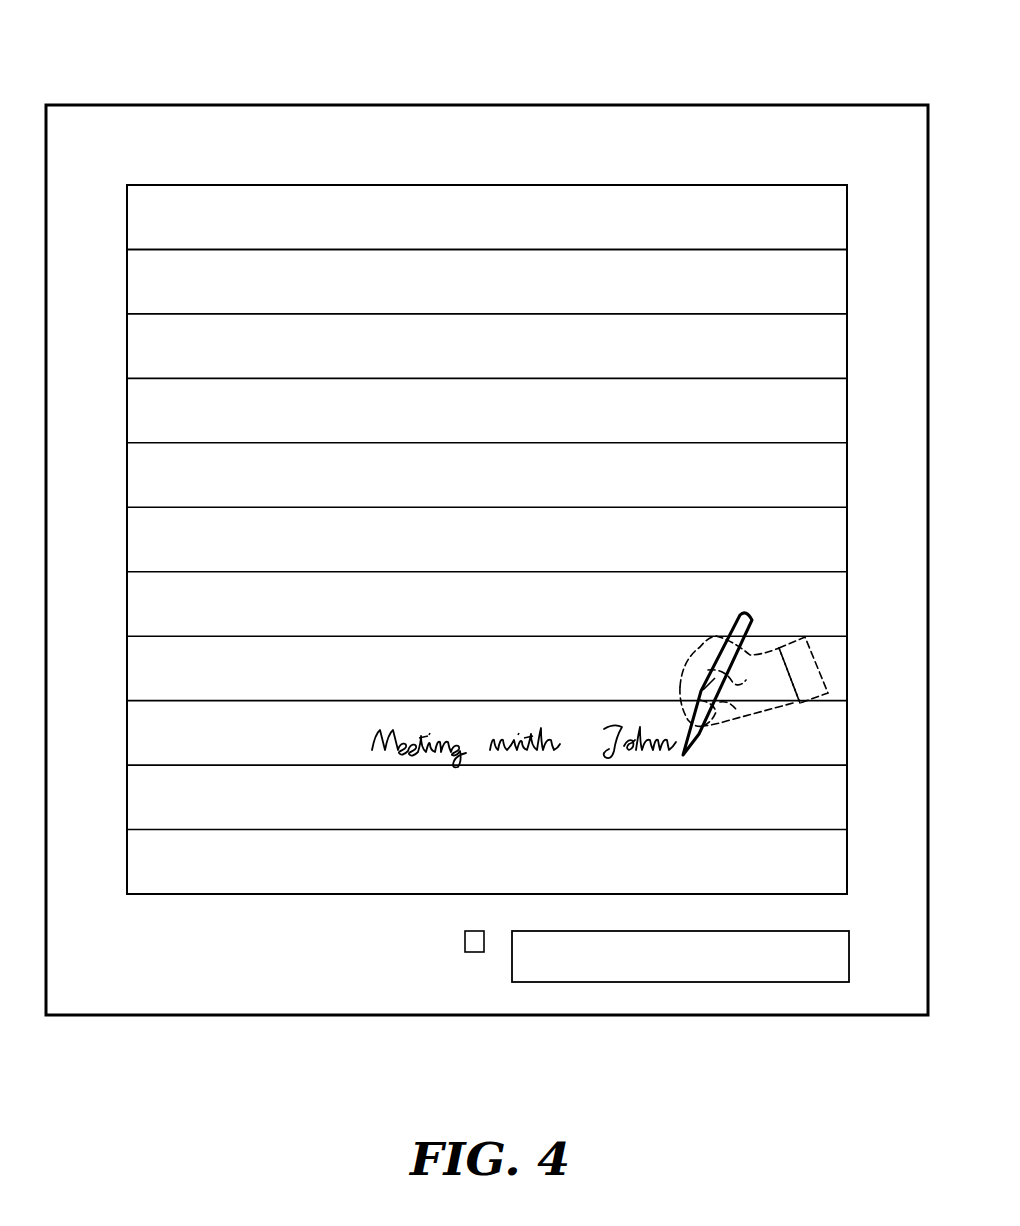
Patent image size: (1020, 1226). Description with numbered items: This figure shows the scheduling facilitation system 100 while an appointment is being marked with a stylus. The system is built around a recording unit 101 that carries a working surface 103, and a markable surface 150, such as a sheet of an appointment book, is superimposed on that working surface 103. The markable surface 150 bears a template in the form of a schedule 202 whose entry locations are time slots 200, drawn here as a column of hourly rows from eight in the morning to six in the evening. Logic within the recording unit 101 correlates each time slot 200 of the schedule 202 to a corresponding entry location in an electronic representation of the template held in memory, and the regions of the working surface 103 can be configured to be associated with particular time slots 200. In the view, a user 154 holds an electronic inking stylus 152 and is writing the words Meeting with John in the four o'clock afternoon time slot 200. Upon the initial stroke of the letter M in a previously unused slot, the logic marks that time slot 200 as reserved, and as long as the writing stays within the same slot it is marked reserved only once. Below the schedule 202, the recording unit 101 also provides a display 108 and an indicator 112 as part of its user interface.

The scheduling facilitation system 100 is at (750, 24).
The recording unit 101 is at (789, 105).
The working surface 103 is at (135, 162).
The display 108 is at (823, 972).
The indicator 112 is at (474, 938).
The markable surface 150 is at (682, 185).
The stylus 152 is at (740, 624).
The user 154 is at (779, 695).
The time slot 200 is at (213, 746).
The schedule 202 is at (283, 208).